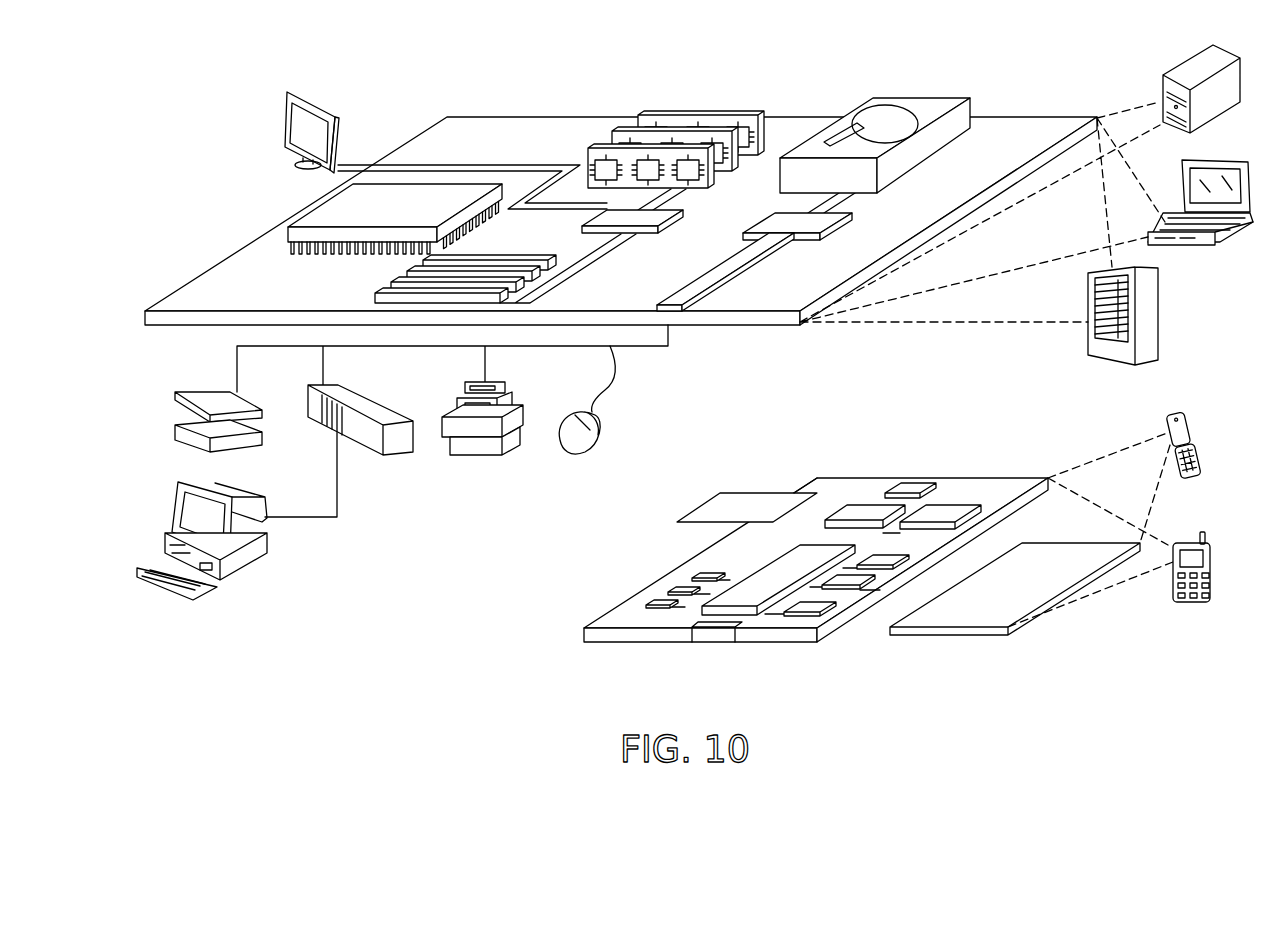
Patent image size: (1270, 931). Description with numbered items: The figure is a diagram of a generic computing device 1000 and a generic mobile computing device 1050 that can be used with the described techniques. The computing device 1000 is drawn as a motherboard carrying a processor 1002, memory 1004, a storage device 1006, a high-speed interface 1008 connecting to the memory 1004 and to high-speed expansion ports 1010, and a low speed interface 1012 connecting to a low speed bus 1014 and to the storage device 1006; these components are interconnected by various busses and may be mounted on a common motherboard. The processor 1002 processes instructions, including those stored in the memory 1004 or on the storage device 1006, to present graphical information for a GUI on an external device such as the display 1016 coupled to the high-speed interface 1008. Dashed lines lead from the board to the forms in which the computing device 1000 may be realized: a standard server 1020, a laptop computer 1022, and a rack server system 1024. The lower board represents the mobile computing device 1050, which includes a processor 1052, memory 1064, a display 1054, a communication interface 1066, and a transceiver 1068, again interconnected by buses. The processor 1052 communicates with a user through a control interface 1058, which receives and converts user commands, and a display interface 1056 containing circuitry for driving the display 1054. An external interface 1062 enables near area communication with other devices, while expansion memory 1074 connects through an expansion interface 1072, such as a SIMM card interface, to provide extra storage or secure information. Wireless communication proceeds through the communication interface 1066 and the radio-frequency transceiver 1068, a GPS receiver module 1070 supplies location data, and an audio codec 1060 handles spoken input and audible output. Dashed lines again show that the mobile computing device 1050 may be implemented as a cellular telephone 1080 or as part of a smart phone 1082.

The computing device 1000 is at (695, 318).
The processor 1002 is at (310, 212).
The memory 1004 is at (703, 112).
The storage device 1006 is at (910, 97).
The high-speed interface 1008 is at (646, 215).
The high-speed expansion ports 1010 is at (397, 280).
The low speed interface 1012 is at (770, 216).
The low speed bus 1014 is at (672, 298).
The display 1016 is at (289, 92).
The standard server 1020 is at (1180, 70).
The laptop computer 1022 is at (1228, 160).
The rack server system 1024 is at (1160, 315).
The mobile computing device 1050 is at (844, 535).
The processor 1052 is at (748, 583).
The display 1054 is at (1048, 555).
The display interface 1056 is at (822, 612).
The control interface 1058 is at (860, 583).
The audio codec 1060 is at (888, 557).
The external interface 1062 is at (712, 629).
The memory 1064 is at (672, 590).
The communication interface 1066 is at (868, 507).
The transceiver 1068 is at (948, 508).
The GPS receiver module 1070 is at (910, 485).
The expansion interface 1072 is at (797, 490).
The expansion memory 1074 is at (728, 490).
The cellular telephone 1080 is at (1176, 410).
The smart phone 1082 is at (1187, 541).